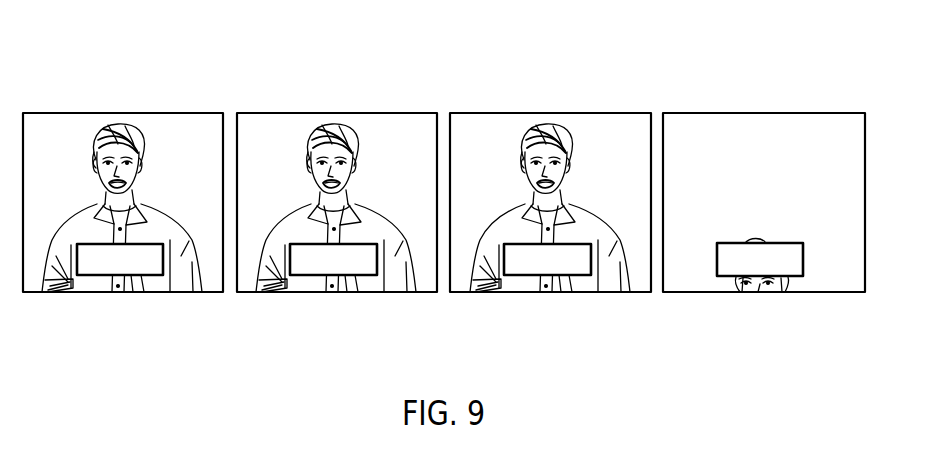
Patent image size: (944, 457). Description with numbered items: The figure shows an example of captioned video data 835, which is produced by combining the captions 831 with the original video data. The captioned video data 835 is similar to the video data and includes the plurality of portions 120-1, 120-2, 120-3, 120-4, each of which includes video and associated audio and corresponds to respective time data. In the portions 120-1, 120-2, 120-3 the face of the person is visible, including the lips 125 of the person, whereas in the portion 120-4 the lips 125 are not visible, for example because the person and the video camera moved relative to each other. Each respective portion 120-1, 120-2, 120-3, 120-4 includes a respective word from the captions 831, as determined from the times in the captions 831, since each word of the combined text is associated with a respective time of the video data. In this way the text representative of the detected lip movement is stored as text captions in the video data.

The captioned video data 835 is at (100, 34).
The portion 120-1 is at (123, 113).
The portion 120-2 is at (338, 113).
The portion 120-3 is at (552, 113).
The portion 120-4 is at (765, 113).
The lips 125 is at (109, 186).
The captions 831 is at (140, 292).